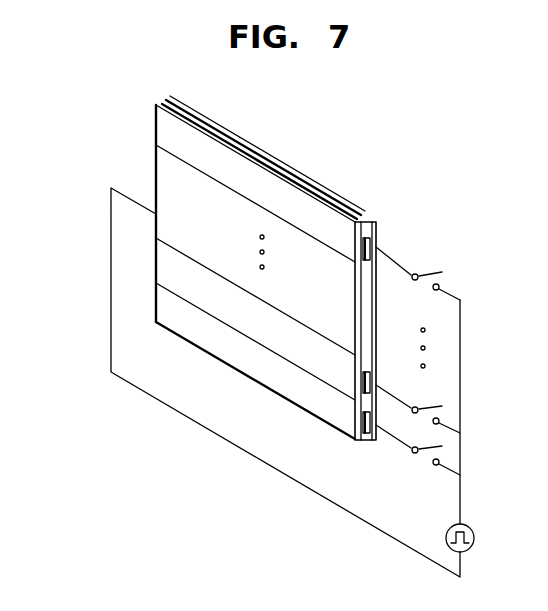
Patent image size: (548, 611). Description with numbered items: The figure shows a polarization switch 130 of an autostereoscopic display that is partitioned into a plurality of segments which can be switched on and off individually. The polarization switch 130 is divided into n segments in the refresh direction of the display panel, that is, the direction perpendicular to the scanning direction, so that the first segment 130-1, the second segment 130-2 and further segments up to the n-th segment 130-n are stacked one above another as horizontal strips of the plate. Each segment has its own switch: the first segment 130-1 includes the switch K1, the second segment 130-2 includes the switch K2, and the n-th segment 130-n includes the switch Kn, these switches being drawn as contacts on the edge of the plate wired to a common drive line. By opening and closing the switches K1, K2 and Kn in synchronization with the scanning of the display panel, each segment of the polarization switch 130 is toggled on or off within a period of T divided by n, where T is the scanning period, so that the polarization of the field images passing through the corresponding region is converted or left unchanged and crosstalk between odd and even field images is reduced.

The polarization switch 130 is at (298, 158).
The n-th segment 130-n is at (165, 128).
The second segment 130-2 is at (163, 259).
The first segment 130-1 is at (163, 304).
The switch Kn is at (356, 234).
The switch K2 is at (366, 391).
The switch K1 is at (364, 433).